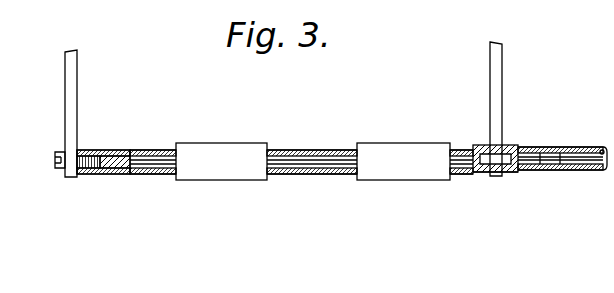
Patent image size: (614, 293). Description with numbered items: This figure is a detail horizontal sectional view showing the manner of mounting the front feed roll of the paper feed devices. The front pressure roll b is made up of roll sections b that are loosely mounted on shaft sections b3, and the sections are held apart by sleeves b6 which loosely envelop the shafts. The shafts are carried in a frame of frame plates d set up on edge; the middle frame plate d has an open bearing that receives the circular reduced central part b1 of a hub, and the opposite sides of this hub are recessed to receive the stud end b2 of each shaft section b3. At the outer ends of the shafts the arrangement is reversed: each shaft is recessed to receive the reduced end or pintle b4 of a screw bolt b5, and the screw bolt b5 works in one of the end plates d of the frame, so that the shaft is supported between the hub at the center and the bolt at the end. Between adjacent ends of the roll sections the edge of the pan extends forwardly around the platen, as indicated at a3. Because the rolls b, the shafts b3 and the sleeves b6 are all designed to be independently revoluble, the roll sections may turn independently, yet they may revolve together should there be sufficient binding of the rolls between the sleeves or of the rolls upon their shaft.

The front pressure roll b is at (233, 160).
The circular reduced central part of hub b1 is at (501, 147).
The stud end b2 is at (483, 173).
The shaft section b3 is at (545, 164).
The reduced end or pintle b4 is at (105, 170).
The screw bolt b5 is at (65, 179).
The sleeve b6 is at (298, 151).
The frame plate d is at (70, 107).
The forwardly extending edge of pan a3 is at (593, 48).